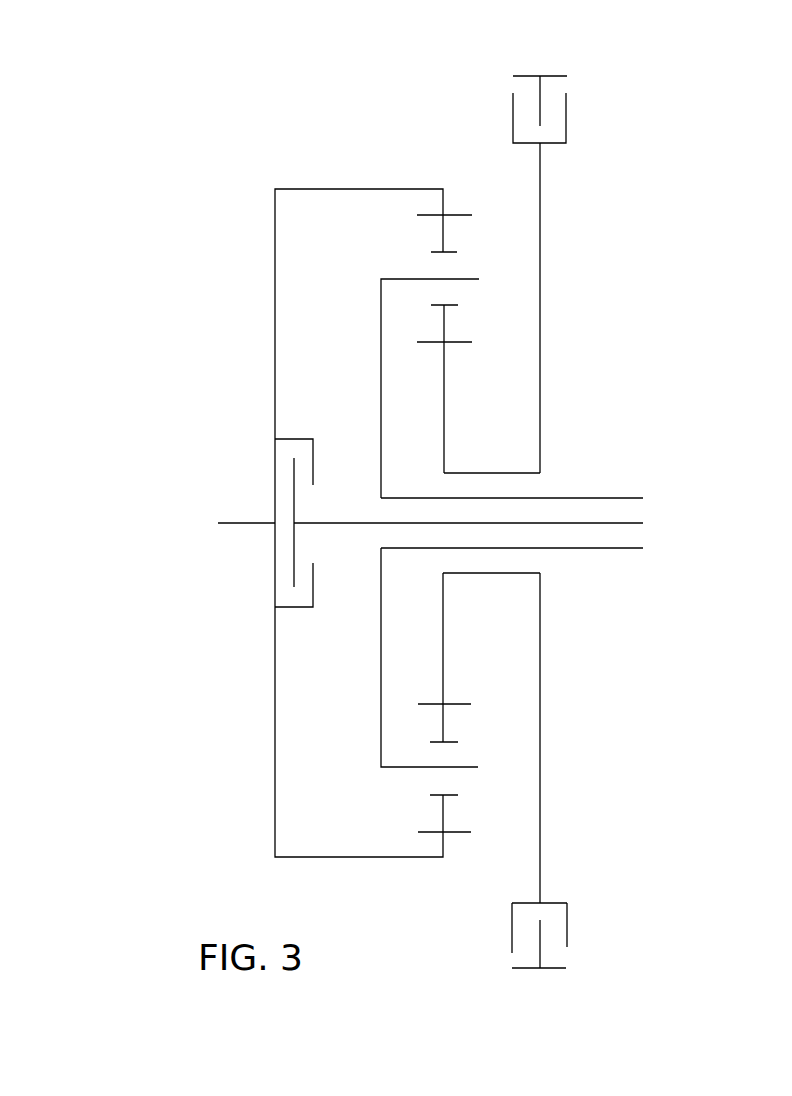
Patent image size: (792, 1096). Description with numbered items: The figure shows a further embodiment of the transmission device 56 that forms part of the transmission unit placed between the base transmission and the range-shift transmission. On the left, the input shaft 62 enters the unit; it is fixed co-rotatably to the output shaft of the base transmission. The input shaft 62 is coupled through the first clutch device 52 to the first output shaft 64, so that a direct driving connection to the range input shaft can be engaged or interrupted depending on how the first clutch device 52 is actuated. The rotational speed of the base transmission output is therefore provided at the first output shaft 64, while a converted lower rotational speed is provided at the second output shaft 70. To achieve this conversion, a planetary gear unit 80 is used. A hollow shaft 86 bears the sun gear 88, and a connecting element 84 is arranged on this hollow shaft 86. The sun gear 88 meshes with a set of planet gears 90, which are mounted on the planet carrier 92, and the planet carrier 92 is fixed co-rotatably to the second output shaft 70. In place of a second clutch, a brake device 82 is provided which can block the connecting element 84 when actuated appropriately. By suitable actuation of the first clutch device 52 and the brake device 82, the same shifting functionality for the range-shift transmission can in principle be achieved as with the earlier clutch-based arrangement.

The transmission device 56 is at (406, 100).
The planetary gear unit 80 is at (459, 175).
The brake device 82 is at (556, 100).
The connecting element 84 is at (540, 232).
The hollow shaft 86 is at (484, 473).
The sun gear 88 is at (444, 402).
The planet gears 90 is at (443, 242).
The planet carrier 92 is at (381, 322).
The second output shaft 70 is at (597, 498).
The first output shaft 64 is at (628, 522).
The input shaft 62 is at (250, 523).
The first clutch device 52 is at (294, 578).